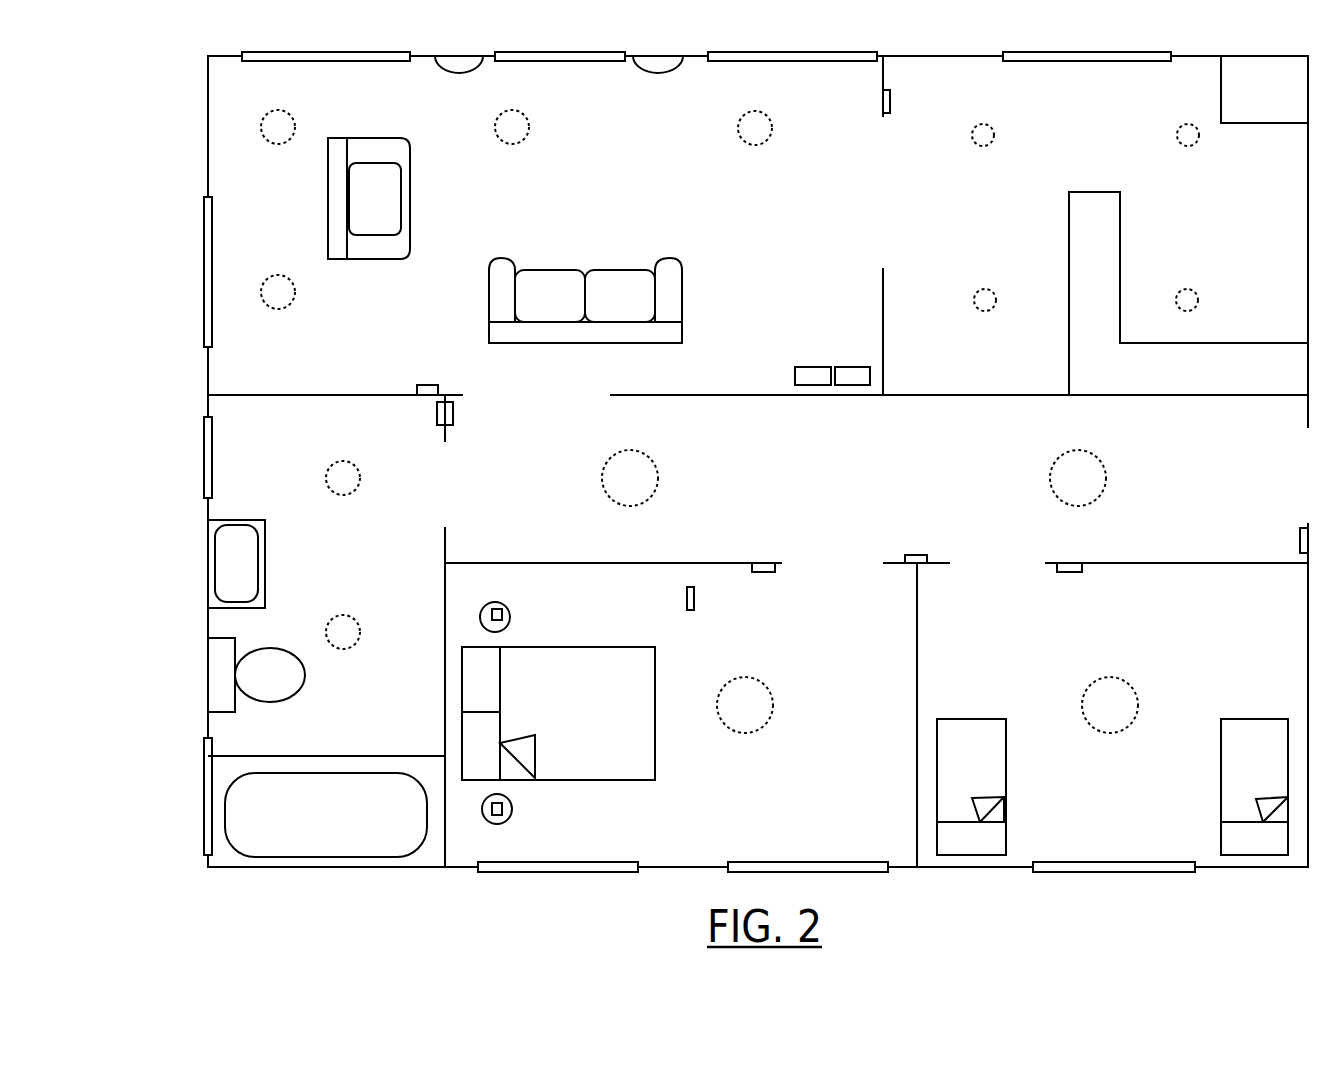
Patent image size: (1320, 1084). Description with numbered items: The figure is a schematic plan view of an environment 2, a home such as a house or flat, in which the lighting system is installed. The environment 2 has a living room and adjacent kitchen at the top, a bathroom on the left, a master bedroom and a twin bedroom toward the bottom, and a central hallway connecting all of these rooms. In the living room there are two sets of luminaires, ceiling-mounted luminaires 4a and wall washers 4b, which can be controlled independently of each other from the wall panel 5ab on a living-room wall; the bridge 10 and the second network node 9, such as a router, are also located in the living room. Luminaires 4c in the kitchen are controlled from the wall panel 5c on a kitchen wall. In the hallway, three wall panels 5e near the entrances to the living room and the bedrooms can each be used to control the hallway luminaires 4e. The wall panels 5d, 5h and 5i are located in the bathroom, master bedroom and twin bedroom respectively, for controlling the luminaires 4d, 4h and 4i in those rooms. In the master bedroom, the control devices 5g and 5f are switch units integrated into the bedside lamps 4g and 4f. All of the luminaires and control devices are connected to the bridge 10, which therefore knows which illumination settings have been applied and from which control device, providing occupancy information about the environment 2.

The environment 2 is at (208, 136).
The ceiling-mounted luminaires 4a is at (295, 292).
The wall washers 4b is at (452, 73).
The luminaires 4c is at (994, 133).
The luminaires 4d is at (360, 478).
The luminaires 4e is at (658, 478).
The luminaire 4f is at (512, 808).
The luminaire 4g is at (510, 617).
The luminaires 4h is at (773, 705).
The luminaires 4i is at (1115, 733).
The wall panel 5ab is at (425, 385).
The wall panel 5c is at (891, 100).
The wall panel 5d is at (437, 412).
The wall panels 5e is at (455, 410).
The switch unit 5f is at (500, 824).
The switch unit 5g is at (498, 603).
The wall panel 5h is at (763, 572).
The wall panel 5i is at (1070, 572).
The second network node 9 is at (812, 367).
The bridge 10 is at (852, 367).